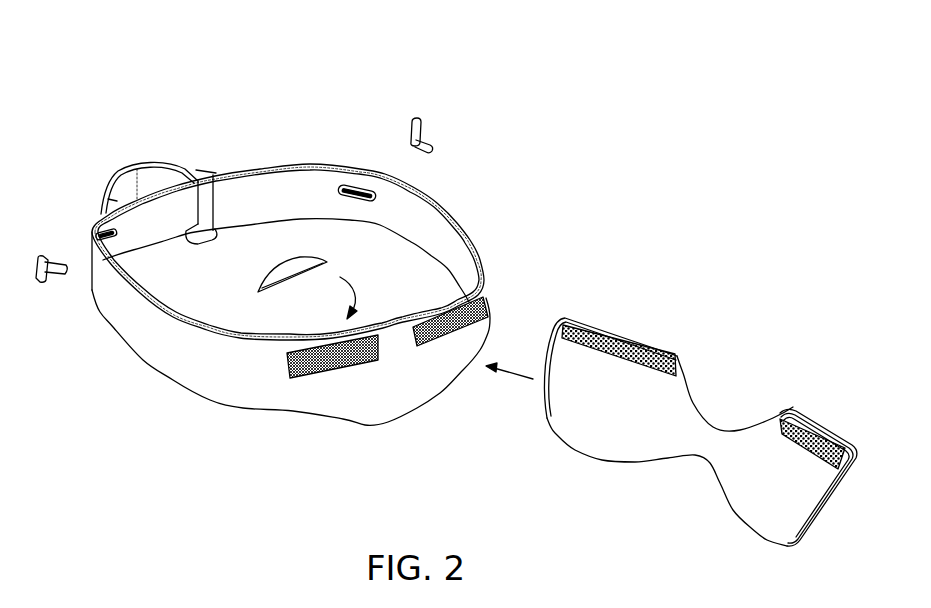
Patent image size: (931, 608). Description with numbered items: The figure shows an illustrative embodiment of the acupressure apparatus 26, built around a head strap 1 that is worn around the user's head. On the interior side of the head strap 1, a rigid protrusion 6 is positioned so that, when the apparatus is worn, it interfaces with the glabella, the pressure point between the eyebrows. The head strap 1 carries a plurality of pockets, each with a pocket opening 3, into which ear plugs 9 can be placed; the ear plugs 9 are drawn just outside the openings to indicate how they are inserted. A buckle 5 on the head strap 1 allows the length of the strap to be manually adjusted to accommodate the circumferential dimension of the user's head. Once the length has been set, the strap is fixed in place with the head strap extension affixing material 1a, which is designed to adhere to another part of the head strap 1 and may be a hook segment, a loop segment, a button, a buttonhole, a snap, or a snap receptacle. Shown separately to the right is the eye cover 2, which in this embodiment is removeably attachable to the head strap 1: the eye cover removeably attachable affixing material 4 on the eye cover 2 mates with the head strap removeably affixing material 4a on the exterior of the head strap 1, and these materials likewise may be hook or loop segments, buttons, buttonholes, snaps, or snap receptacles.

The acupressure apparatus 26 is at (134, 45).
The head strap 1 is at (183, 372).
The head strap extension affixing material 1a is at (155, 170).
The buckle 5 is at (213, 172).
The pocket opening 3 is at (353, 184).
The ear plugs 9 is at (370, 180).
The rigid protrusion 6 is at (262, 268).
The head strap removeably affixing material 4a is at (303, 378).
The eye cover 2 is at (570, 430).
The eye cover removeably attachable affixing material 4 is at (803, 423).